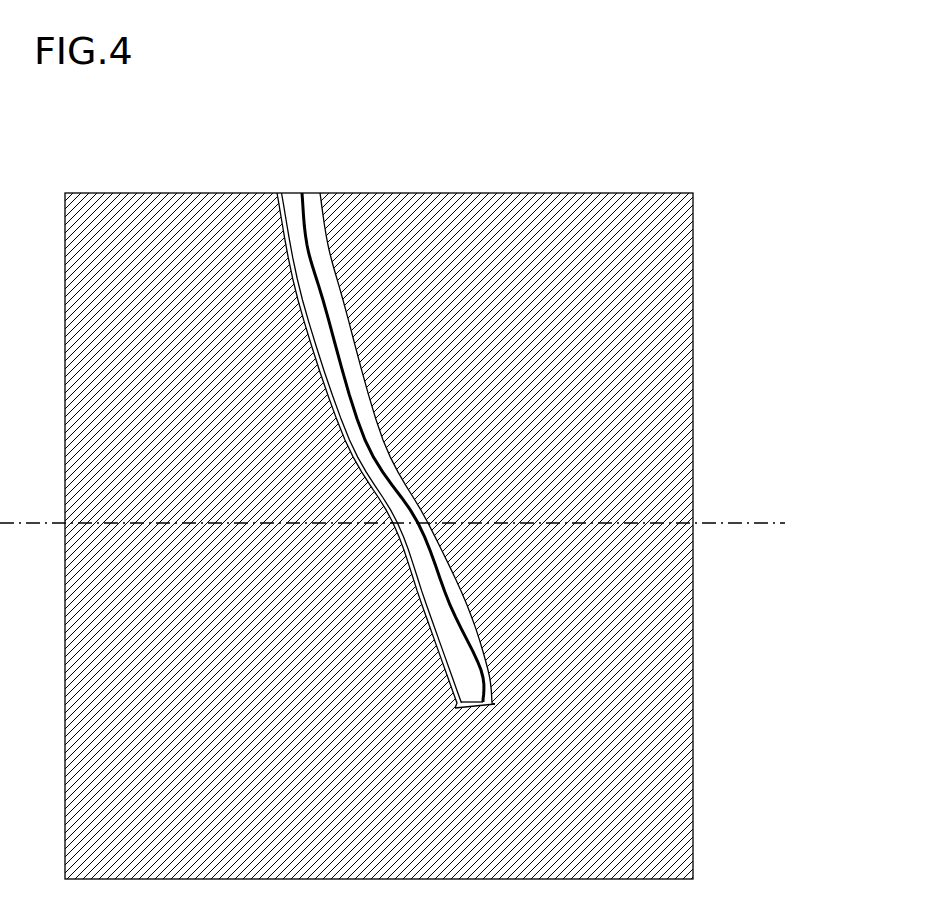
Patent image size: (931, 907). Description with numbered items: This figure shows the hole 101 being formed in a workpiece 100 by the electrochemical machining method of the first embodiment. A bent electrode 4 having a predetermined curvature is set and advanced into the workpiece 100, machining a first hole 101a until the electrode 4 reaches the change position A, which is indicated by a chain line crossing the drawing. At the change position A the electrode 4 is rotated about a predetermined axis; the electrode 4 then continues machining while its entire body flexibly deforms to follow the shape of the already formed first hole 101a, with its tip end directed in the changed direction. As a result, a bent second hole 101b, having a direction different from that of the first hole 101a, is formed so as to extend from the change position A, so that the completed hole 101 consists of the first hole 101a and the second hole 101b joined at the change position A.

The electrode 4 is at (303, 193).
The base body 100 is at (480, 235).
The hole 101 is at (533, 410).
The first hole 101a is at (345, 312).
The second hole 101b is at (484, 667).
The change position A is at (745, 520).